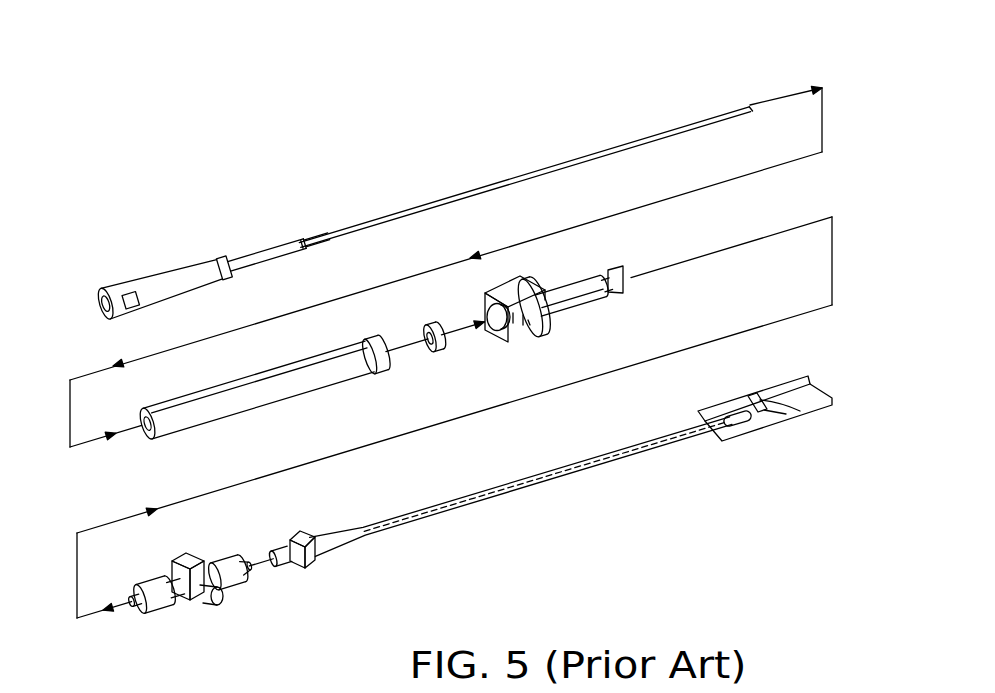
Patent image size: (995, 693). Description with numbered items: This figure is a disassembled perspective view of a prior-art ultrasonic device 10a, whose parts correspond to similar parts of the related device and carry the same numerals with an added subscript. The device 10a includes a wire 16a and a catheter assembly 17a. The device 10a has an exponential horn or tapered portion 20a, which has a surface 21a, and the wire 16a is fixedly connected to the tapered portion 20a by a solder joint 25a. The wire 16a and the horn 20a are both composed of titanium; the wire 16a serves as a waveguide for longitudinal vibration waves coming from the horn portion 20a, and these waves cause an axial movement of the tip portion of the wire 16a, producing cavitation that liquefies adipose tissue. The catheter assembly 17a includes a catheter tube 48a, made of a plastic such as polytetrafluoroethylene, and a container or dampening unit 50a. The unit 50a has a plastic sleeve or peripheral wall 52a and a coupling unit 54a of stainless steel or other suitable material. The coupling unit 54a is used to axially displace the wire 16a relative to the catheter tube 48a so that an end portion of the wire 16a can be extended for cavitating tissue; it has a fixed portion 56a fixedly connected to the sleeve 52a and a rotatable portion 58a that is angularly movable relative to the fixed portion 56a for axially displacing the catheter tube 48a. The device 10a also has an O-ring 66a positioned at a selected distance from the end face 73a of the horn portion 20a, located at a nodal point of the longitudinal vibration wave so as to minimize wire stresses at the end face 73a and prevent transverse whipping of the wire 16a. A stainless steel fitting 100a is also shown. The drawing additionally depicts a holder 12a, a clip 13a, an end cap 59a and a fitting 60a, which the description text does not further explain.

The ultrasonic device 10a is at (423, 318).
The needle holder trough 12a is at (748, 429).
The clip 13a is at (750, 396).
The wire 16a is at (514, 178).
The catheter assembly 17a is at (472, 500).
The exponential horn or tapered portion 20a is at (190, 268).
The surface 21a is at (270, 261).
The solder joint 25a is at (302, 243).
The catheter tube 48a is at (514, 484).
The container or dampening unit 50a is at (383, 376).
The sleeve or peripheral wall 52a is at (219, 415).
The coupling unit 54a is at (542, 335).
The fixed portion 56a is at (522, 339).
The rotatable portion 58a is at (580, 312).
The end cap 59a is at (597, 273).
The fitting 60a is at (228, 594).
The O-ring 66a is at (422, 333).
The end face 73a is at (327, 237).
The fitting 100a is at (210, 562).